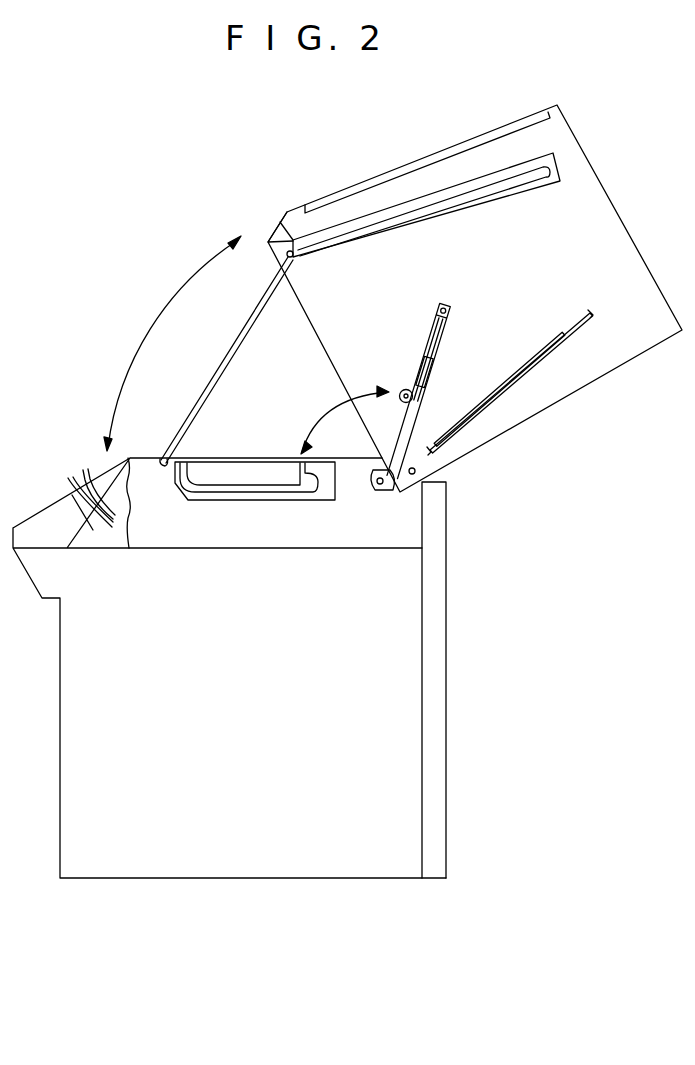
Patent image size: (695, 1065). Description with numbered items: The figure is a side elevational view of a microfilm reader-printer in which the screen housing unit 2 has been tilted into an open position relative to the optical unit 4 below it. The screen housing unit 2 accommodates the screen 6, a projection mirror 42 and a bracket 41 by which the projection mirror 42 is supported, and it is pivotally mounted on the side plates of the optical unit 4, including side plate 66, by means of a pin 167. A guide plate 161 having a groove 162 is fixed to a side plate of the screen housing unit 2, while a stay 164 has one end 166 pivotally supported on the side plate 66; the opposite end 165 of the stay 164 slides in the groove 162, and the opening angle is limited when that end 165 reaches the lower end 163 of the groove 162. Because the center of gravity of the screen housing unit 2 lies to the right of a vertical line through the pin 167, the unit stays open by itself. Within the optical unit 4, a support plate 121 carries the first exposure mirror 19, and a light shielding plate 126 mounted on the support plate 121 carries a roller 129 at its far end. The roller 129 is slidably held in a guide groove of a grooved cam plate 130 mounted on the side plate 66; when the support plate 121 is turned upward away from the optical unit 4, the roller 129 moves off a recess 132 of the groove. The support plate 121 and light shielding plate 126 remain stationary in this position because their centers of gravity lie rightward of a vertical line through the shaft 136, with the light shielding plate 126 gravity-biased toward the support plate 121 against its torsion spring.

The screen housing unit 2 is at (608, 197).
The optical unit 4 is at (486, 465).
The screen 6 is at (432, 157).
The first exposure mirror 19 is at (434, 352).
The bracket 41 is at (530, 369).
The projection mirror 42 is at (531, 346).
The side plate 66 is at (273, 548).
The support plate 121 is at (448, 334).
The light shielding plate 126 is at (420, 362).
The roller 129 is at (406, 404).
The grooved cam plate 130 is at (216, 497).
The recess 132 is at (312, 493).
The shaft 136 is at (378, 490).
The guide plate 161 is at (416, 222).
The groove 162 is at (497, 187).
The lower end of the groove 163 is at (285, 230).
The stay 164 is at (218, 372).
The end of the stay 165 is at (291, 258).
The strap foot 166 is at (163, 459).
The pin 167 is at (418, 472).